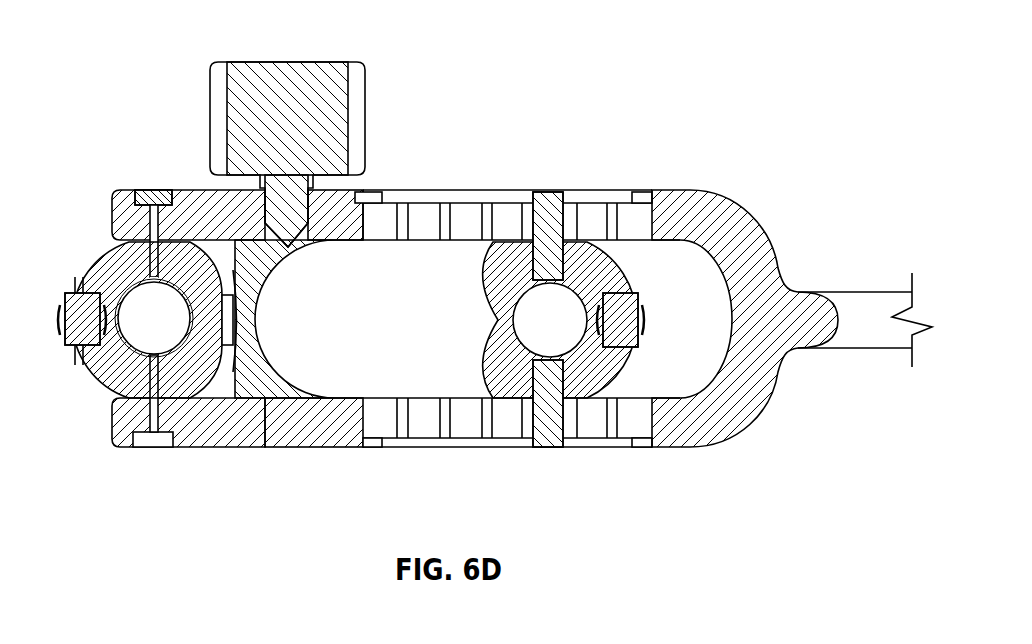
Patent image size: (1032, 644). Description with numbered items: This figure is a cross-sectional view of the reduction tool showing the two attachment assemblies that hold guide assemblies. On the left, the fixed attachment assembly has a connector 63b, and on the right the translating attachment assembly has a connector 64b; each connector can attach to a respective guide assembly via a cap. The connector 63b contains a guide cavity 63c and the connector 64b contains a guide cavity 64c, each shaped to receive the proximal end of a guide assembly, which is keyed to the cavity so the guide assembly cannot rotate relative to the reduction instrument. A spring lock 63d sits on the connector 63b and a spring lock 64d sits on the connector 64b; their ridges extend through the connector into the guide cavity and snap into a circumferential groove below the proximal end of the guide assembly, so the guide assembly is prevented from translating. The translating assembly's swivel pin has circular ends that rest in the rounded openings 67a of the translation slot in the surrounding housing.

The connector 63b is at (108, 383).
The guide cavity 63c is at (128, 318).
The spring lock 63d is at (75, 333).
The connector 64b is at (502, 377).
The guide cavity 64c is at (560, 285).
The spring lock 64d is at (623, 303).
The rounded opening 67a is at (630, 427).